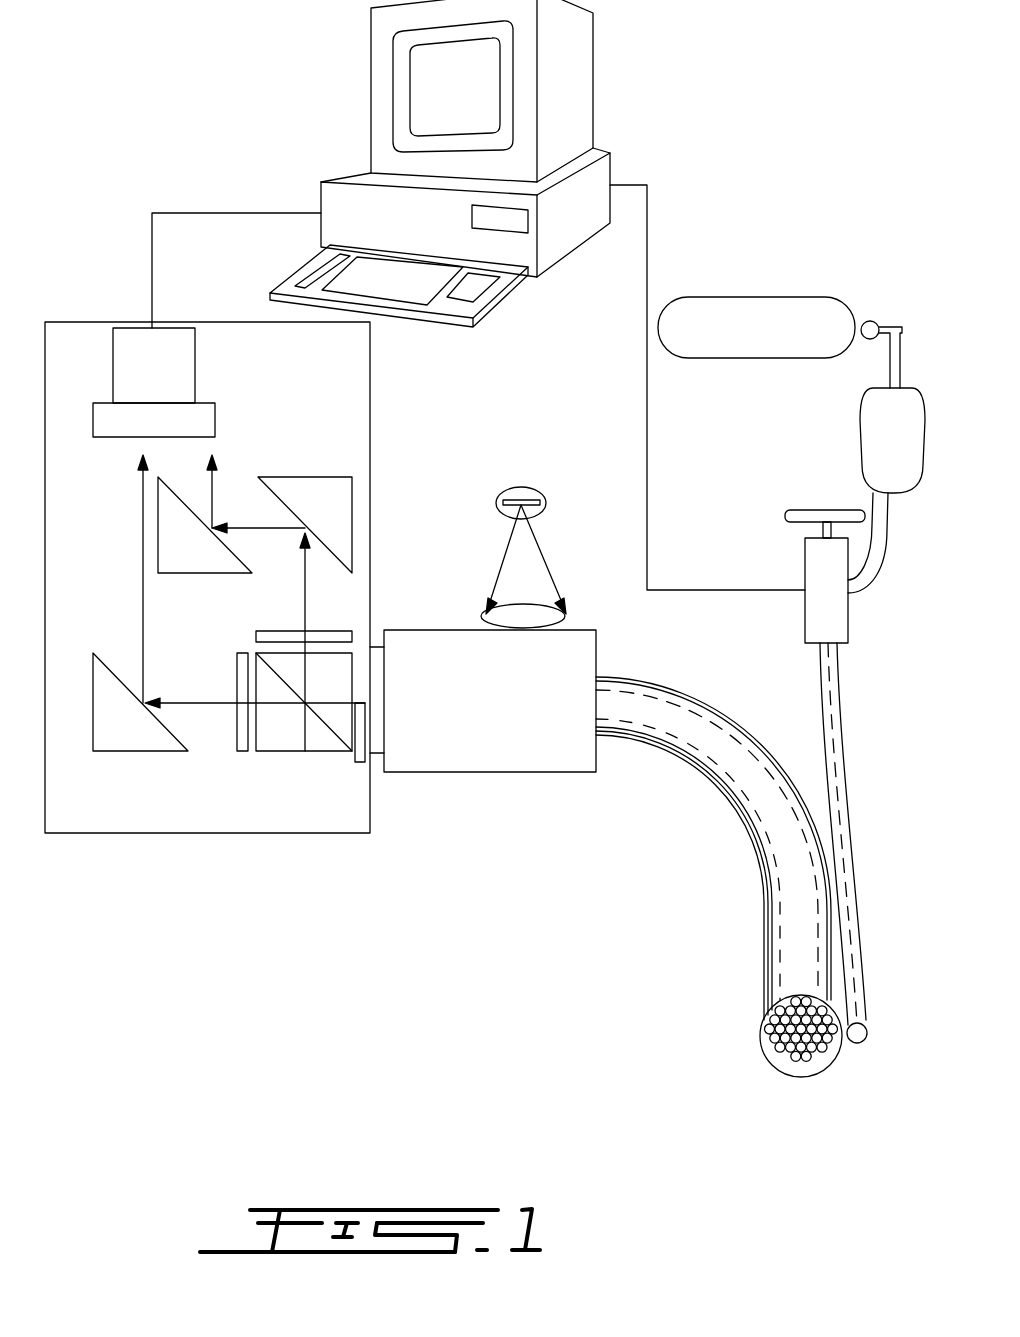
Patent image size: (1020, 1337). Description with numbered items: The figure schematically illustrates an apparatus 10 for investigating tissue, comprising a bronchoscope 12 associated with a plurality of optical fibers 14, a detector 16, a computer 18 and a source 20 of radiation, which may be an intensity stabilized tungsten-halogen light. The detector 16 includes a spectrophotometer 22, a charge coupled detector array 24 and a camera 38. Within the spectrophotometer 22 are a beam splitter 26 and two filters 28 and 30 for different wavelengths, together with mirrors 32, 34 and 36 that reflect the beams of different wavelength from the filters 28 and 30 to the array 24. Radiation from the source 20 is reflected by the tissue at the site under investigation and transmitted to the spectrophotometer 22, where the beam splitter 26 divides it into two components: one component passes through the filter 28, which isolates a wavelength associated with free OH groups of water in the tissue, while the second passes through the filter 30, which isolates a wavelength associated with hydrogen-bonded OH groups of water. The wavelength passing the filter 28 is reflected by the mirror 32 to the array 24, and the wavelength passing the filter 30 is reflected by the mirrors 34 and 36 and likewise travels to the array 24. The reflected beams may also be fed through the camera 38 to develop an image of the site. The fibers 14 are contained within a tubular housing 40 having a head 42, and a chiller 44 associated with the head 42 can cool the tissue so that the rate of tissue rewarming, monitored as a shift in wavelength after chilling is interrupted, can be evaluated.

The apparatus 10 is at (178, 897).
The bronchoscope 12 is at (509, 774).
The optical fibers 14 is at (805, 1043).
The detector 16 is at (207, 630).
The computer 18 is at (593, 97).
The source of radiation 20 is at (521, 489).
The spectrophotometer 22 is at (327, 835).
The charge coupled detector array 24 is at (215, 418).
The beam splitter 26 is at (360, 763).
The filter 28 is at (242, 753).
The filter 30 is at (330, 631).
The mirror 32 is at (137, 752).
The mirror 34 is at (326, 477).
The mirror 36 is at (227, 575).
The camera 38 is at (195, 363).
The tubular housing 40 is at (697, 734).
The head 42 is at (760, 1041).
The chiller 44 is at (845, 741).